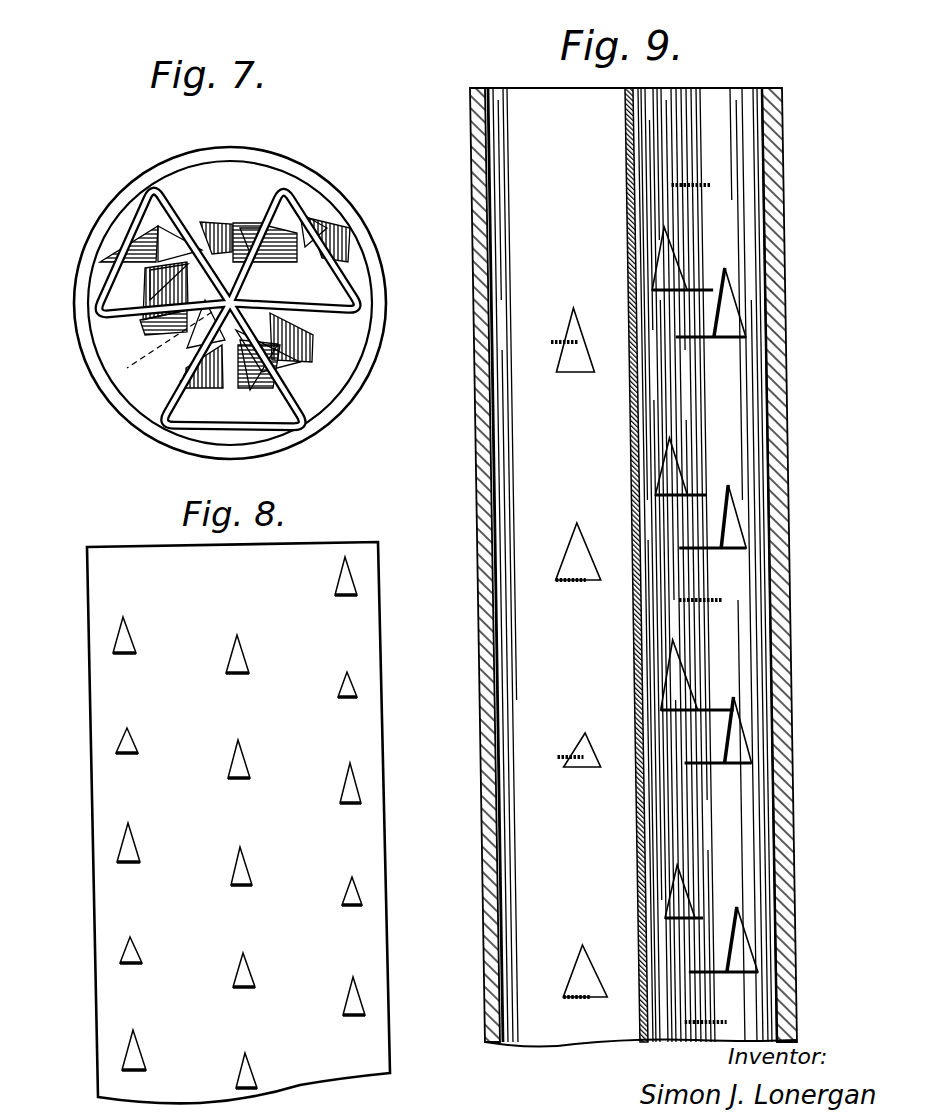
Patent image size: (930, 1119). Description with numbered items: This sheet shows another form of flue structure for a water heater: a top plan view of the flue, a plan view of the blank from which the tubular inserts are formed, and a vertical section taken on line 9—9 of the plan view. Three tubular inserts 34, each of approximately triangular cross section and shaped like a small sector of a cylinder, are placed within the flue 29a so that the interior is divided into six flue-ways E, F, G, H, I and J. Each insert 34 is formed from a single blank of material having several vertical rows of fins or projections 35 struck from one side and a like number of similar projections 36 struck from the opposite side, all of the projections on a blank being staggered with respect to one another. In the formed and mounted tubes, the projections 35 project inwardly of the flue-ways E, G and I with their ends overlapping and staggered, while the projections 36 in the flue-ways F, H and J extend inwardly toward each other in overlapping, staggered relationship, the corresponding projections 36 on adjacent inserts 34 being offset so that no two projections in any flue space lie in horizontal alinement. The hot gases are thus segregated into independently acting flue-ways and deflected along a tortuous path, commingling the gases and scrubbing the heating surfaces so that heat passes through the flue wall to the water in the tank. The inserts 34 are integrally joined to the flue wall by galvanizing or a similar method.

In FIG. 7, the flue 29a is at (341, 201).
In FIG. 9, the flue 29a is at (472, 122).
In FIG. 7, the tubular insert 34 is at (262, 195).
In FIG. 9, the tubular insert 34 is at (763, 646).
In FIG. 7, the fin or projection 35 is at (190, 236).
In FIG. 8, the fin or projection 35 is at (230, 676).
In FIG. 9, the fin or projection 35 is at (700, 184).
In FIG. 7, the projection 36 is at (234, 228).
In FIG. 8, the projection 36 is at (343, 697).
In FIG. 9, the projection 36 is at (555, 340).
In FIG. 7, the section line 9— 9 is at (407, 307).
In FIG. 7, the flue-way E is at (343, 273).
In FIG. 7, the flue-way F is at (207, 176).
In FIG. 7, the flue-way G is at (150, 207).
In FIG. 7, the flue-way H is at (150, 365).
In FIG. 7, the flue-way I is at (195, 405).
In FIG. 7, the flue-way J is at (340, 370).